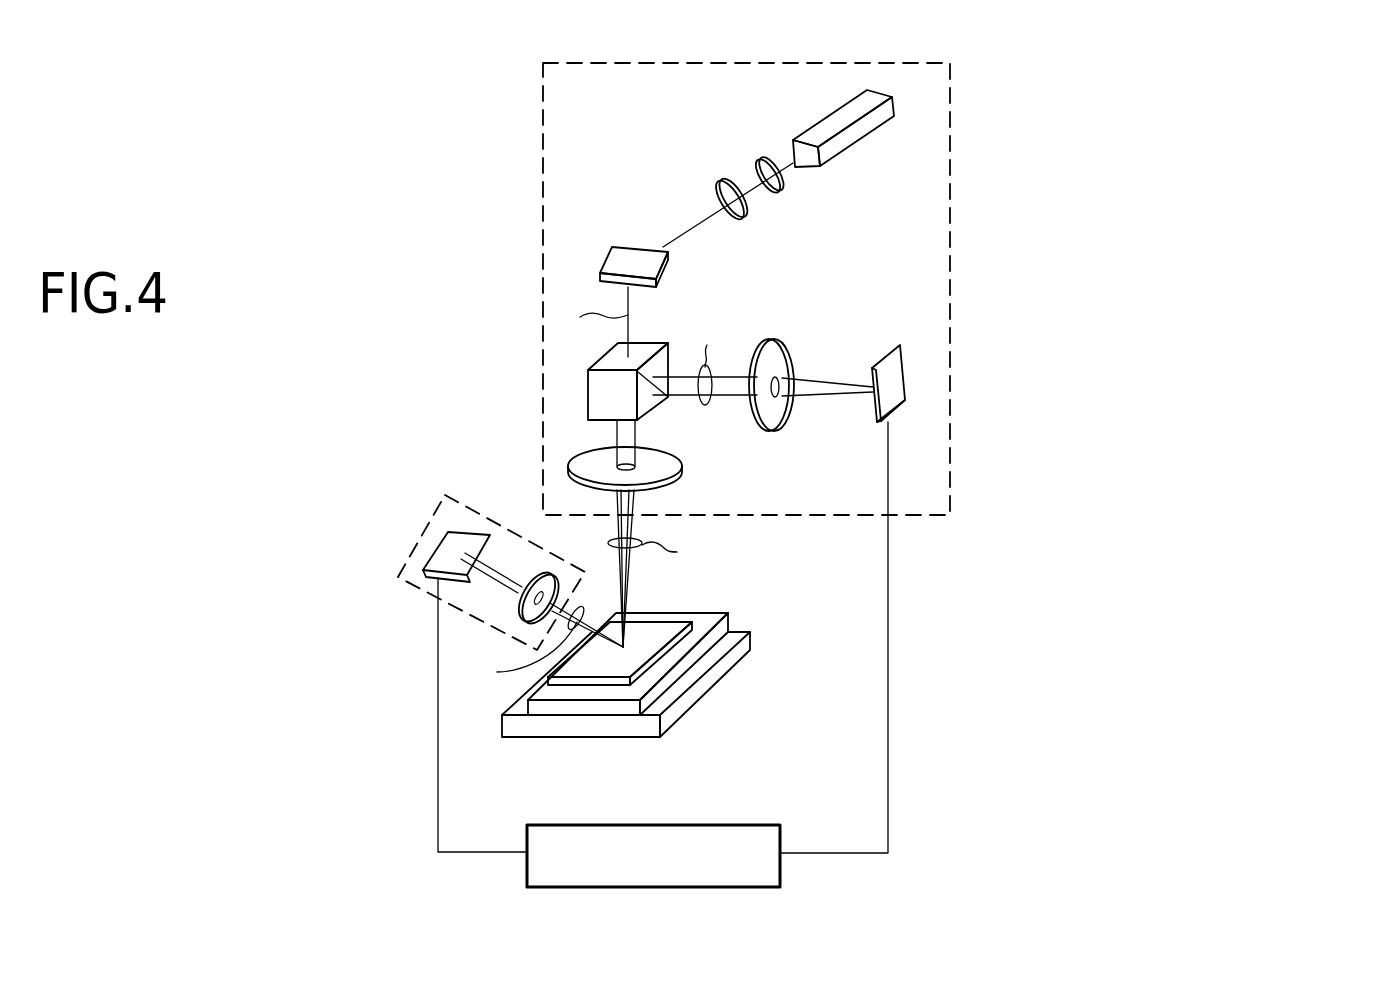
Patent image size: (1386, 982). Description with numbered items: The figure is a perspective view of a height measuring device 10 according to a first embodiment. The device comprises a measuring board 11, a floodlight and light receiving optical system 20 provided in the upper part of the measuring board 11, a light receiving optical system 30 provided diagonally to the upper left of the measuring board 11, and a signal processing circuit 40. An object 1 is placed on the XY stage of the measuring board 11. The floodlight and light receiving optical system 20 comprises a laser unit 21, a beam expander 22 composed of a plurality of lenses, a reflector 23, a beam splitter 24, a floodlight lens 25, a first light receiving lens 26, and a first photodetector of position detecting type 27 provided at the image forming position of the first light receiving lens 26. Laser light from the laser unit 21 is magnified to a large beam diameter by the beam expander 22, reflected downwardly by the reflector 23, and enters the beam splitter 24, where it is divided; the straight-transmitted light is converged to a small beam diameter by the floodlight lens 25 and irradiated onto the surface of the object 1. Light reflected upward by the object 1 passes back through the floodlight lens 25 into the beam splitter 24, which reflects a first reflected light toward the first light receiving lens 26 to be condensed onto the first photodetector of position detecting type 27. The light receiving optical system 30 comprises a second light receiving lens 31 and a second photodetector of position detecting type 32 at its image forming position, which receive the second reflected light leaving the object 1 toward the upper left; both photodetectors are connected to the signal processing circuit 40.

The height measuring device 10 is at (250, 198).
The floodlight and light receiving optical system 20 is at (953, 113).
The laser unit 21 is at (857, 142).
The beam expander 22 is at (758, 148).
The reflector 23 is at (606, 258).
The beam splitter 24 is at (588, 392).
The floodlight lens 25 is at (568, 463).
The first light receiving lens 26 is at (787, 338).
The first photodetector of position detecting type 27 is at (902, 373).
The light receiving optical system 30 is at (403, 577).
The second light receiving lens 31 is at (512, 612).
The second photodetector of position detecting type 32 is at (427, 579).
The signal processing circuit 40 is at (527, 828).
The object 1 is at (653, 640).
The measuring board 11 is at (588, 723).